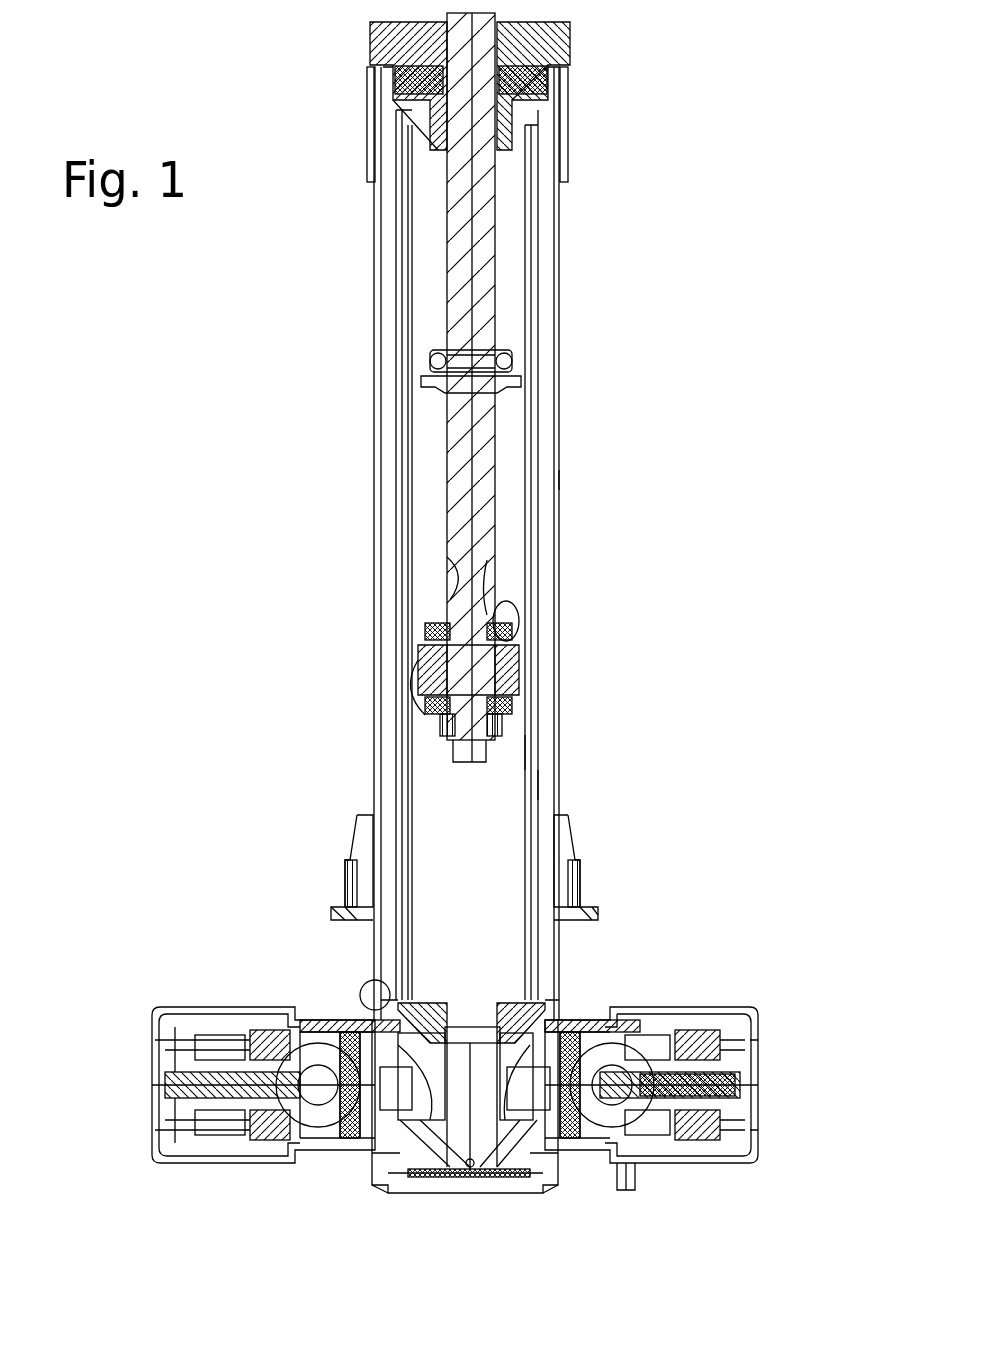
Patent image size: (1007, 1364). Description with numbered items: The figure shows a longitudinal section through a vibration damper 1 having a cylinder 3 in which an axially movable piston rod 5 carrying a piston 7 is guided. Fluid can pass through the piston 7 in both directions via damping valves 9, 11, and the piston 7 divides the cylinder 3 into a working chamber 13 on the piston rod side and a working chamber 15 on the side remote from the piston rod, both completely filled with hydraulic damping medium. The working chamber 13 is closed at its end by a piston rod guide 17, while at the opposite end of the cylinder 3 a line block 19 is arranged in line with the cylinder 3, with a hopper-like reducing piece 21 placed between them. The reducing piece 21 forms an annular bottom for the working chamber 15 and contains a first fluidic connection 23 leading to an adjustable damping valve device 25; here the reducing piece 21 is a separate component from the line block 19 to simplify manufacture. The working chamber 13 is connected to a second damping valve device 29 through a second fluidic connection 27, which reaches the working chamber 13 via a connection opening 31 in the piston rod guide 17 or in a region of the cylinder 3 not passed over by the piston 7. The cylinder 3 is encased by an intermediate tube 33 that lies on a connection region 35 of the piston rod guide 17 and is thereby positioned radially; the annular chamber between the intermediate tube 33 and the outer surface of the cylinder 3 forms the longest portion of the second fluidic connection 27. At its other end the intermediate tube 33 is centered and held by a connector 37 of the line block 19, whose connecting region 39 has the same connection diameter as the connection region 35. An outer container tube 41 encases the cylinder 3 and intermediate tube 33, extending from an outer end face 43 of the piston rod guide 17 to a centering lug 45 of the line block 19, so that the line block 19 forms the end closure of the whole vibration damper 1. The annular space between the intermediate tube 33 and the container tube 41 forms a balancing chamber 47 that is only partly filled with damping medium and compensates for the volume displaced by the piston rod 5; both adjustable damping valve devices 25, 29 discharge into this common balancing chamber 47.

The vibration damper 1 is at (722, 815).
The cylinder 3 is at (537, 548).
The piston rod 5 is at (480, 243).
The piston 7 is at (432, 725).
The damping valve 9 is at (443, 665).
The damping valve 11 is at (455, 605).
The working chamber on the piston rod side 13 is at (510, 275).
The working chamber remote from the piston rod 15 is at (512, 752).
The piston rod guide 17 is at (558, 95).
The line block 19 is at (532, 1210).
The reducing piece 21 is at (552, 998).
The first fluidic connection 23 is at (468, 1040).
The adjustable damping valve device 25 is at (258, 1180).
The second fluidic connection 27 is at (535, 322).
The second damping valve device 29 is at (690, 1190).
The connection opening 31 is at (520, 168).
The intermediate tube 33 is at (540, 422).
The connection region 35 is at (397, 100).
The connector 37 is at (490, 1130).
The connecting region 39 is at (430, 1037).
The container tube 41 is at (562, 480).
The outer end face 43 is at (505, 87).
The centering lug 45 is at (363, 990).
The balancing chamber 47 is at (540, 785).